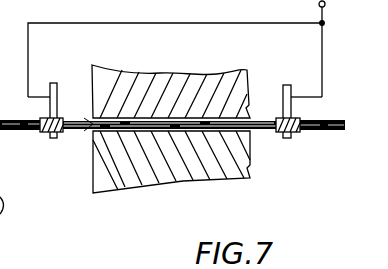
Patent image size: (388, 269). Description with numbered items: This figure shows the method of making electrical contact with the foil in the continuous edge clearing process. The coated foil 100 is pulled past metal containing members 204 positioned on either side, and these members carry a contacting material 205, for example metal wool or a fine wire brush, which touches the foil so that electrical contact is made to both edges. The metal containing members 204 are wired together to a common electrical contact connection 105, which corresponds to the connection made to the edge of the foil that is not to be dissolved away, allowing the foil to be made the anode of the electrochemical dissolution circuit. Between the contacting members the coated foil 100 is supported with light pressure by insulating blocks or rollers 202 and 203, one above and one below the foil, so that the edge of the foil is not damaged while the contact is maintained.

The coated foil 100 is at (152, 119).
The electrical contact connection 105 is at (327, 17).
The insulating block or roller 202 is at (200, 95).
The insulating block or roller 203 is at (185, 170).
The metal containing member 204 is at (50, 138).
The contacting material 205 is at (100, 120).